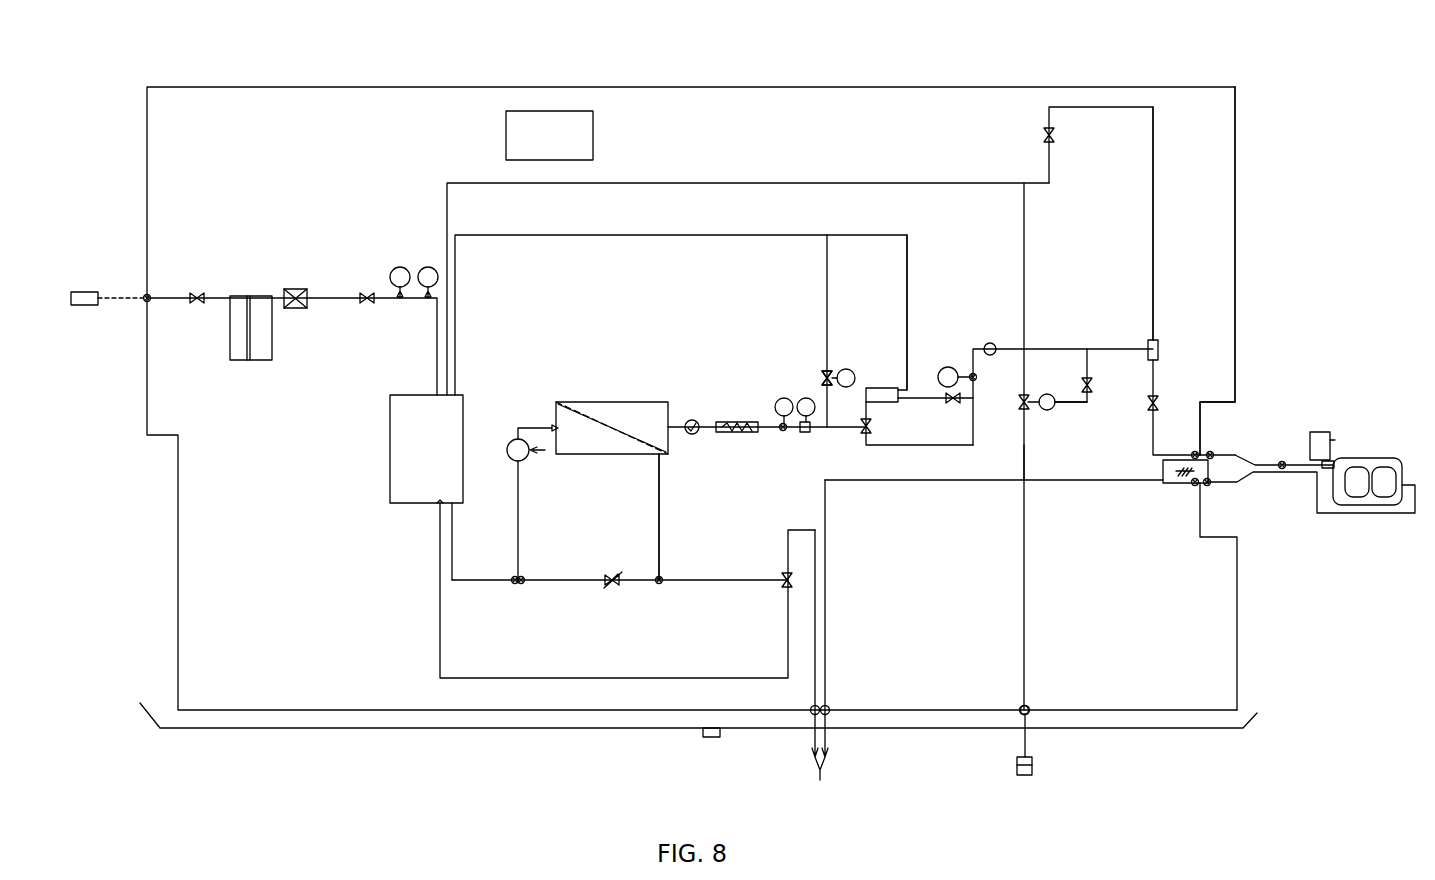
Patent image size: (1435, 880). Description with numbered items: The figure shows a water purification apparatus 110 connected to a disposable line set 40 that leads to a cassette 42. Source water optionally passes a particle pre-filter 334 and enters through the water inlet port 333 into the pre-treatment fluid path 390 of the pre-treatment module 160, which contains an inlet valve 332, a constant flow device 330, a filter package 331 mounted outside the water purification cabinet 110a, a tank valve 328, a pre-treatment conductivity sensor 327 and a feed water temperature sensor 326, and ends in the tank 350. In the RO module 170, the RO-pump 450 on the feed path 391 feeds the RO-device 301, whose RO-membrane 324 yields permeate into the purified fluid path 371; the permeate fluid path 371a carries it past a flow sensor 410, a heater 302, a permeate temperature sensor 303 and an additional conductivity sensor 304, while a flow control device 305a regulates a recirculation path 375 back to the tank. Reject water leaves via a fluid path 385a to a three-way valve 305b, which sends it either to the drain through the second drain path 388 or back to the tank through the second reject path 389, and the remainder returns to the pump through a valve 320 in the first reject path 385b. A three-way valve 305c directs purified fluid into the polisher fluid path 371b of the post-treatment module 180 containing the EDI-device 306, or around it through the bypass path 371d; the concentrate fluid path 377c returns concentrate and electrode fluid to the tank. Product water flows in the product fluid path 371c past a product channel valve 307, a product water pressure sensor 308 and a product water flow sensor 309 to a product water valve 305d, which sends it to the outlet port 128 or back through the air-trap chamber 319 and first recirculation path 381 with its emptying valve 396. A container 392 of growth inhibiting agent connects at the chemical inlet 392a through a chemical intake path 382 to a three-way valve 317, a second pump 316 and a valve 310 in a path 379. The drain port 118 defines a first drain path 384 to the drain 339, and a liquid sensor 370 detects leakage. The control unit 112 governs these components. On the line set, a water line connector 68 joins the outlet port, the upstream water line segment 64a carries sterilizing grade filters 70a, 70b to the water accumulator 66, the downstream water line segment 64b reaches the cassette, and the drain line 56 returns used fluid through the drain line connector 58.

The disposable line set 40 is at (1412, 448).
The cassette 42 is at (1370, 506).
The drain line 56 is at (1283, 470).
The drain line connector 58 is at (1200, 485).
The upstream water line segment 64a is at (1302, 458).
The downstream water line segment 64b is at (1334, 462).
The water accumulator 66 is at (1330, 440).
The water line connector 68 is at (1203, 448).
The sterilizing grade filter 70a is at (1212, 449).
The sterilizing grade filter 70b is at (1218, 448).
The water purification apparatus 110 is at (1290, 108).
The water purification cabinet 110a is at (1235, 155).
The control unit 112 is at (536, 146).
The drain port 118 is at (1178, 488).
The outlet port 128 is at (1193, 450).
The pre-treatment module 160 is at (300, 120).
The RO module 170 is at (758, 172).
The post-treatment module 180 is at (1195, 115).
The RO-device 301 is at (626, 430).
The heater 302 is at (735, 420).
The permeate temperature sensor 303 is at (782, 397).
The additional conductivity sensor 304 is at (806, 397).
The flow control device 305a is at (827, 370).
The three-way valve 305b is at (783, 575).
The three-way valve 305c is at (917, 423).
The product water valve 305d is at (1158, 400).
The EDI-device 306 is at (895, 386).
The product channel valve 307 is at (953, 405).
The product water pressure sensor 308 is at (948, 366).
The product water flow sensor 309 is at (990, 342).
The valve 310 is at (1106, 375).
The second pump 316 is at (1030, 410).
The three-way valve 317 is at (976, 410).
The air-trap chamber 319 is at (1150, 338).
The valve 320 is at (610, 575).
The RO-membrane 324 is at (598, 414).
The feed water temperature sensor 326 is at (428, 266).
The pre-treatment conductivity sensor 327 is at (398, 266).
The tank valve 328 is at (367, 292).
The constant flow device 330 is at (290, 288).
The filter package 331 is at (233, 294).
The inlet valve 332 is at (197, 292).
The water inlet port 333 is at (150, 302).
The particle pre-filter 334 is at (85, 306).
The drain 339 is at (826, 764).
The tank 350 is at (407, 461).
The liquid sensor 370 is at (720, 737).
The purified fluid path 371 is at (772, 430).
The permeate fluid path 371a is at (614, 519).
The polisher fluid path 371b is at (846, 368).
The product fluid path 371c is at (1038, 348).
The bypass path 371d is at (1000, 447).
The recirculation path 375 is at (685, 233).
The concentrate fluid path 377c is at (900, 233).
The path 379 is at (1093, 404).
The first recirculation path 381 is at (1158, 285).
The chemical intake path 382 is at (1028, 450).
The first drain path 384 is at (1105, 484).
The fluid path 385a is at (655, 472).
The first reject path 385b is at (555, 583).
The second drain path 388 is at (788, 530).
The second reject path 389 is at (740, 678).
The pre-treatment fluid path 390 is at (332, 294).
The feed path 391 is at (498, 583).
The container 392 is at (1035, 766).
The chemical inlet 392a is at (1032, 706).
The emptying valve 396 is at (1045, 128).
The flow sensor 410 is at (692, 418).
The RO-pump 450 is at (510, 460).